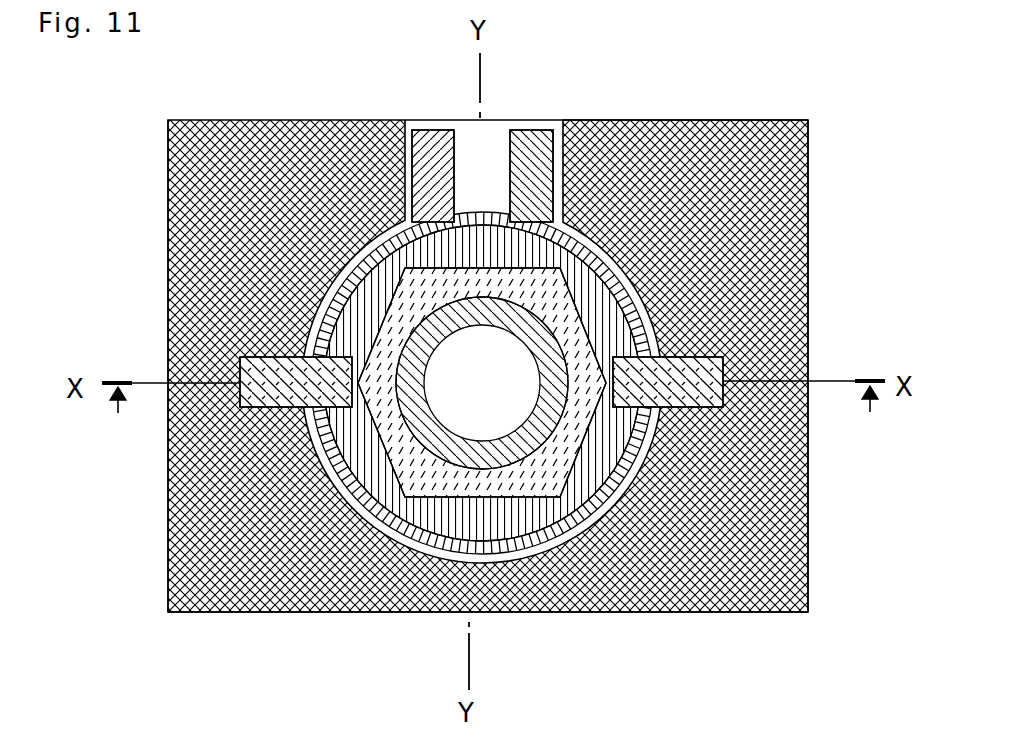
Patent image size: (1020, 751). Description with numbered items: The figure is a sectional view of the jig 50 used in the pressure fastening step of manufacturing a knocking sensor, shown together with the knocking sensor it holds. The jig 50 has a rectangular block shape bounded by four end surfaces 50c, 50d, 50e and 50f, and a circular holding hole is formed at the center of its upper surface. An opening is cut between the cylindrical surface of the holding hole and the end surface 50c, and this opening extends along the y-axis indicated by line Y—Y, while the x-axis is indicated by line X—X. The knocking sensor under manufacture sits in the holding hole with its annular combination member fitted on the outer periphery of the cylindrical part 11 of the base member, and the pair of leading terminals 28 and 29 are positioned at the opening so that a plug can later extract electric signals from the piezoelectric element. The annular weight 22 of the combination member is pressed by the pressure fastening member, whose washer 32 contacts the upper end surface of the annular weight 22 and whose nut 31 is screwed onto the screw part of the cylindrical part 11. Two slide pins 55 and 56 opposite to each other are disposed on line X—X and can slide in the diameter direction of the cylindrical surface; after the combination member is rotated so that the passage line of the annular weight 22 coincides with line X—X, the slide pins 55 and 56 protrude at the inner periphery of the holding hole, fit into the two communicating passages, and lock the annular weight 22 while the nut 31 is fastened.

The cylindrical part 11 is at (433, 342).
The annular weight 22 is at (487, 210).
The leading terminal 28 is at (540, 130).
The leading terminal 29 is at (435, 130).
The nut 31 is at (512, 494).
The washer 32 is at (432, 525).
The jig 50 is at (790, 213).
The end surface 50c is at (710, 120).
The end surface 50d is at (170, 212).
The end surface 50e is at (680, 613).
The end surface 50f is at (806, 523).
The slide pin 55 is at (240, 362).
The slide pin 56 is at (707, 400).